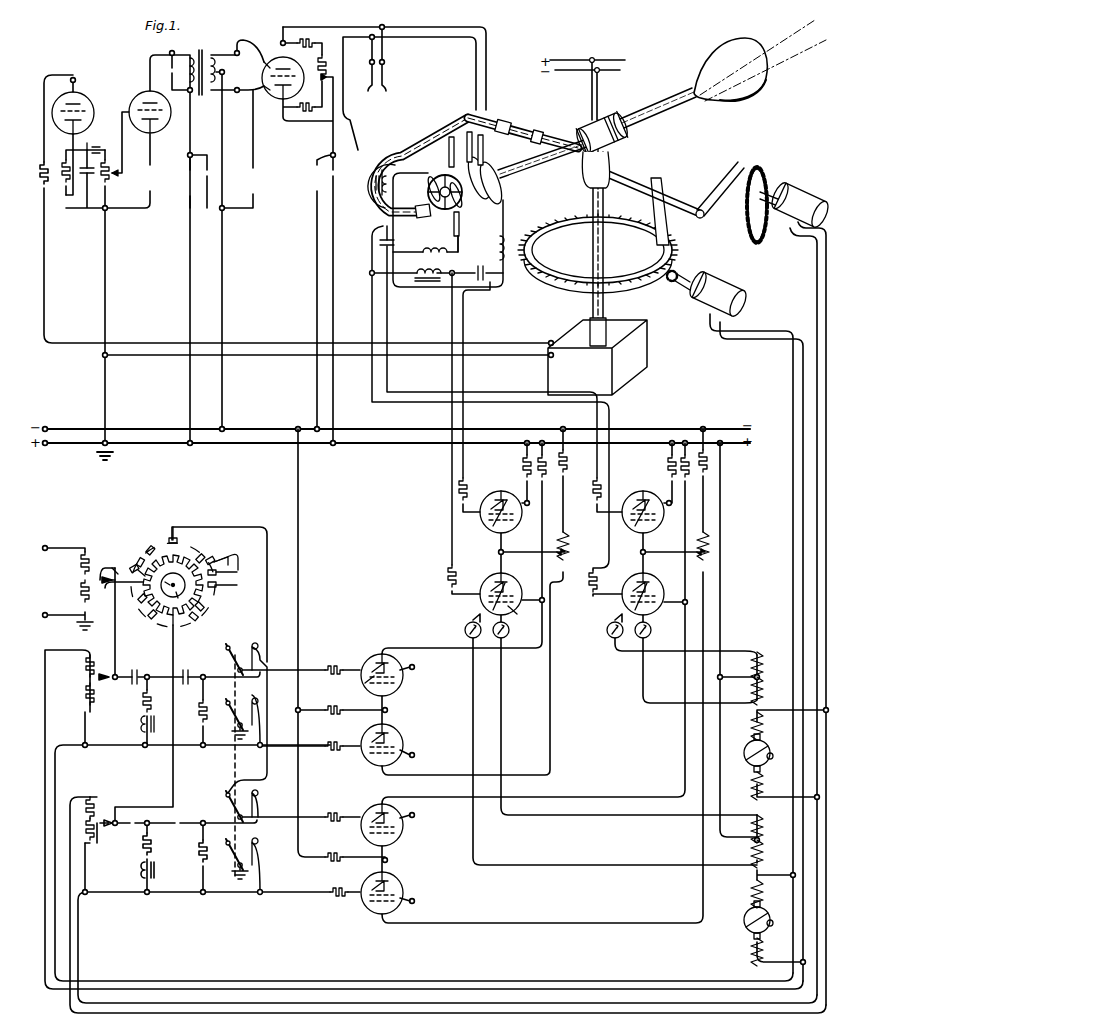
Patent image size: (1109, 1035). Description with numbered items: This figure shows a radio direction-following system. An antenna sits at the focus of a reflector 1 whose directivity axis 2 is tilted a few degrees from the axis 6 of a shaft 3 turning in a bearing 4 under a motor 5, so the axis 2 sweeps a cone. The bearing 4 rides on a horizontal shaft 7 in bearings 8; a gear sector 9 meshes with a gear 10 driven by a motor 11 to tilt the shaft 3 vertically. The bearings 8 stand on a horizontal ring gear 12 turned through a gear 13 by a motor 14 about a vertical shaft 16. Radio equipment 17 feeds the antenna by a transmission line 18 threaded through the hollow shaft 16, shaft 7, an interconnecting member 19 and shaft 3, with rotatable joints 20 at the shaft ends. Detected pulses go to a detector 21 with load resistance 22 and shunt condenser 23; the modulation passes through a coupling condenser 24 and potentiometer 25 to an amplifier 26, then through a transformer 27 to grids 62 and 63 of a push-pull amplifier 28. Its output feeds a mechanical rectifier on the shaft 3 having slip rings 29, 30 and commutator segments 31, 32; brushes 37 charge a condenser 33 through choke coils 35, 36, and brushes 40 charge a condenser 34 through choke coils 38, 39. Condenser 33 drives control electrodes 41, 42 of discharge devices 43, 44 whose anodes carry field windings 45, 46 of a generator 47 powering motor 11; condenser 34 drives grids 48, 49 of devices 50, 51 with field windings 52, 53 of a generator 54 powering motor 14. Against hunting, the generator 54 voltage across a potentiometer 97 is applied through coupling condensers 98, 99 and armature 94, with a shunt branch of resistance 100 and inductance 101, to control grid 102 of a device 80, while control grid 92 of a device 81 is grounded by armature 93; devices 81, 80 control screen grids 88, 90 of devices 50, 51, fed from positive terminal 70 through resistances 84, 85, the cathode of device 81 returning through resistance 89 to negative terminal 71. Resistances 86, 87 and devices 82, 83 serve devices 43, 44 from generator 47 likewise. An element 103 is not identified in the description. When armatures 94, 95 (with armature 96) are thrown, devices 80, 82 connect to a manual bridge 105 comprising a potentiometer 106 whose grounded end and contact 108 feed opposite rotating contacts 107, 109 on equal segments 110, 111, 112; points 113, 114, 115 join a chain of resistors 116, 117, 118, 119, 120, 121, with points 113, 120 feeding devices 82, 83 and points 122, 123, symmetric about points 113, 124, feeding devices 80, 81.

The reflector 1 is at (752, 96).
The axis of directivity 2 is at (776, 42).
The shaft 3 is at (650, 108).
The bearing 4 is at (624, 133).
The motor 5 is at (583, 128).
The axis of the shaft 6 is at (795, 58).
The horizontal shaft 7 is at (648, 175).
The bearings 8 is at (536, 130).
The gear sector 9 is at (724, 175).
The gear 10 is at (760, 178).
The motor 11 is at (800, 180).
The horizontal ring gear 12 is at (558, 285).
The gear 13 is at (676, 285).
The motor 14 is at (732, 284).
The vertical shaft 16 is at (604, 250).
The radio equipment 17 is at (647, 360).
The transmission line 18 is at (593, 236).
The interconnecting member 19 is at (374, 160).
The rotatable joints 20 is at (503, 120).
The detector 21 is at (84, 99).
The load resistance 22 is at (64, 168).
The shunt condenser 23 is at (87, 180).
The coupling condenser 24 is at (96, 147).
The potentiometer 25 is at (110, 180).
The amplifier 26 is at (140, 97).
The transformer 27 is at (201, 88).
The push-pull amplifier 28 is at (281, 55).
The slip ring 29 is at (488, 168).
The slip ring 30 is at (500, 182).
The commutator segment 31 is at (428, 190).
The commutator segment 32 is at (460, 226).
The condenser 33 is at (378, 244).
The condenser 34 is at (479, 282).
The choke coil 35 is at (450, 253).
The choke coil 36 is at (386, 190).
The brushes 37 is at (454, 147).
The choke coil 38 is at (415, 275).
The choke coil 39 is at (503, 262).
The brushes 40 is at (432, 178).
The control electrode 41 is at (635, 526).
The control electrode 42 is at (636, 586).
The electron discharge device 43 is at (658, 526).
The electron discharge device 44 is at (655, 580).
The field winding 45 is at (762, 656).
The field winding 46 is at (763, 687).
The direct current generator 47 is at (766, 745).
The grid 48 is at (494, 524).
The grid 49 is at (494, 586).
The electron discharge device 50 is at (507, 495).
The electron discharge device 51 is at (512, 580).
The field winding 52 is at (764, 850).
The field winding 53 is at (763, 822).
The direct current generator 54 is at (766, 912).
The grid 62 is at (262, 61).
The grid 63 is at (270, 91).
The positive terminal 70 is at (738, 446).
The negative terminal 71 is at (731, 427).
The discharge device 80 is at (404, 682).
The discharge device 81 is at (402, 741).
The discharge device 82 is at (404, 828).
The discharge device 83 is at (402, 886).
The resistance 84 is at (523, 468).
The resistance 85 is at (545, 472).
The resistance 86 is at (668, 468).
The resistance 87 is at (688, 472).
The screen grid 88 is at (488, 495).
The resistance 89 is at (335, 706).
The screen grid 90 is at (512, 602).
The control grid 92 is at (362, 742).
The switch armature 93 is at (230, 712).
The switch armature 94 is at (228, 664).
The switch armature 95 is at (230, 805).
The switch armature 96 is at (230, 853).
The potentiometer 97 is at (86, 672).
The coupling condenser 98 is at (137, 670).
The coupling condenser 99 is at (185, 670).
The resistance 100 is at (143, 700).
The inductance 101 is at (141, 722).
The control grid 102 is at (365, 683).
The resistor 103 is at (100, 805).
The bridge arrangement 105 is at (184, 503).
The potentiometer 106 is at (84, 578).
The variable contact 107 is at (189, 599).
The variable contact 108 is at (108, 577).
The variable contact 109 is at (172, 575).
The resistance segment 110 is at (138, 570).
The resistance segment 111 is at (211, 560).
The resistance segment 112 is at (201, 606).
The point 113 is at (171, 538).
The point 114 is at (218, 586).
The point 115 is at (140, 600).
The resistor 116 is at (151, 549).
The resistor 117 is at (137, 563).
The resistor 118 is at (150, 616).
The resistor 119 is at (194, 620).
The resistor 120 is at (218, 573).
The resistor 121 is at (199, 557).
The point 122 is at (133, 567).
The point 123 is at (233, 556).
The point 124 is at (172, 626).